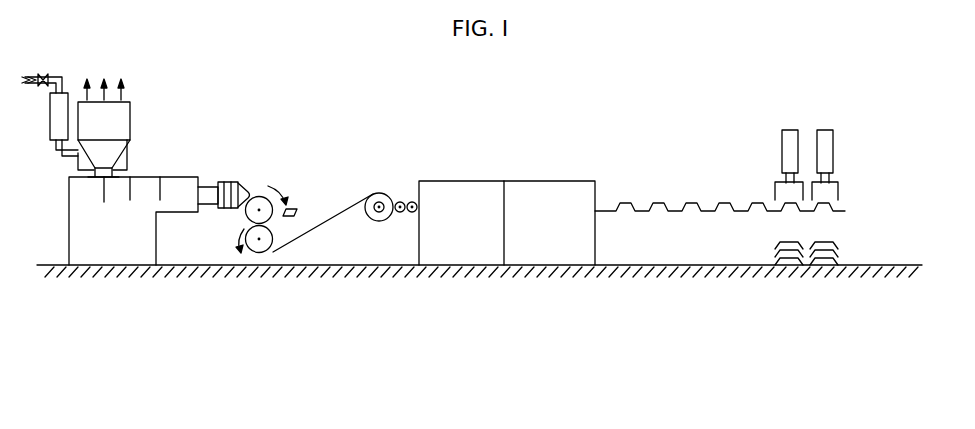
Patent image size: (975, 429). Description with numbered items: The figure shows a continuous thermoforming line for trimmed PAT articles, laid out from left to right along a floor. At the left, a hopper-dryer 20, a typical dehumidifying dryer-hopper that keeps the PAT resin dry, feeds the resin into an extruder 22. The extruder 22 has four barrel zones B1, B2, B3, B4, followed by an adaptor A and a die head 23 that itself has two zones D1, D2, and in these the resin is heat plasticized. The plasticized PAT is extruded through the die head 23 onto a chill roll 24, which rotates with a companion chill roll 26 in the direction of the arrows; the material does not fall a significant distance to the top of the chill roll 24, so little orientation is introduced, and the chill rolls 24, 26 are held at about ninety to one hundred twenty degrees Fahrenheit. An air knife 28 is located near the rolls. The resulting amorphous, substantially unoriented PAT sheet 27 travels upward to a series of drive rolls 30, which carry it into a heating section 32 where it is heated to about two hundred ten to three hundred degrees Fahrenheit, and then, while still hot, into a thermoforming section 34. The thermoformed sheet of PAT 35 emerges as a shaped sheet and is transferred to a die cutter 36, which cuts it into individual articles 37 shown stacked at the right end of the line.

The hopper-dryer 20 is at (123, 115).
The extruder 22 is at (116, 240).
The die head 23 is at (255, 186).
The chill roll 24 is at (250, 210).
The chill roll 26 is at (257, 243).
The PAT sheet 27 is at (304, 234).
The air knife 28 is at (297, 208).
The drive rolls 30 is at (387, 190).
The heating section 32 is at (443, 236).
The thermoforming section 34 is at (520, 226).
The thermoformed sheet of PAT 35 is at (665, 218).
The die cutter 36 is at (843, 162).
The individual articles 37 is at (846, 244).
The adaptor A is at (210, 203).
The barrel zone B1 is at (80, 192).
The barrel zone B2 is at (118, 198).
The barrel zone B3 is at (146, 188).
The barrel zone B4 is at (172, 188).
The die head zone D1 is at (224, 181).
The die head zone D2 is at (235, 181).